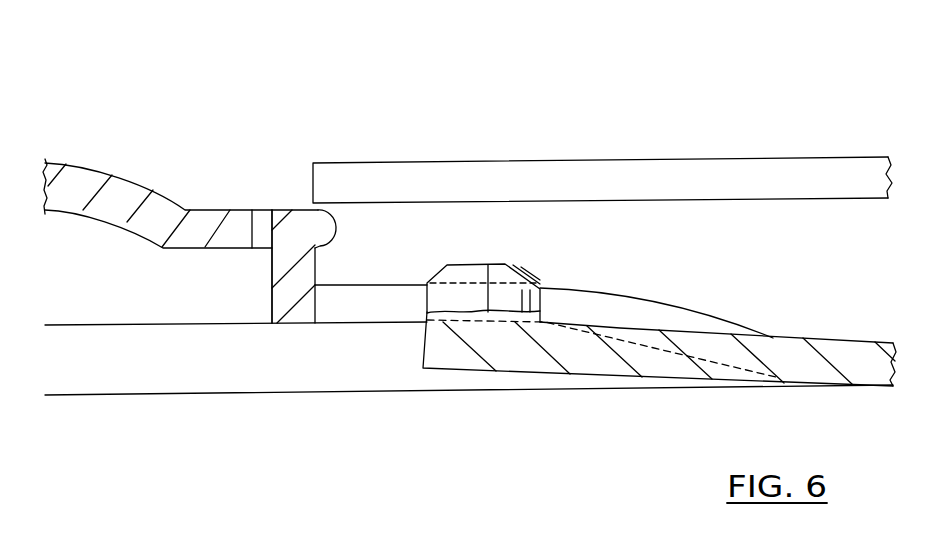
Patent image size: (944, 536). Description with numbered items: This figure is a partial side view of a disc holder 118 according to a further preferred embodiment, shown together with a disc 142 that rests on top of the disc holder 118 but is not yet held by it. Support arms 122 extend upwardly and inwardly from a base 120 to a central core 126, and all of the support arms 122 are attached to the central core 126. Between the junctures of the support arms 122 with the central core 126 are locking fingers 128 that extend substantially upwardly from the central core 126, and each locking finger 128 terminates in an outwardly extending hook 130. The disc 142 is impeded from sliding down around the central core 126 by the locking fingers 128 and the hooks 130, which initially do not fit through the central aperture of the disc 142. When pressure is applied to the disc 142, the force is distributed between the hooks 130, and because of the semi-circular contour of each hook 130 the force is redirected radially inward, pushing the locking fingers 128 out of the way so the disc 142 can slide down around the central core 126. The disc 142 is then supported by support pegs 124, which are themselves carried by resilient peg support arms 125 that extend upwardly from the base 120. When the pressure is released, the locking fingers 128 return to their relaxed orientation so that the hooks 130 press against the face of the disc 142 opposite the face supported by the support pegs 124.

The disc holder 118 is at (290, 86).
The base 120 is at (467, 392).
The support arms 122 is at (368, 293).
The support pegs 124 is at (477, 273).
The peg support arms 125 is at (697, 371).
The central core 126 is at (97, 162).
The locking fingers 128 is at (282, 266).
The hook 130 is at (336, 218).
The disc 142 is at (613, 157).